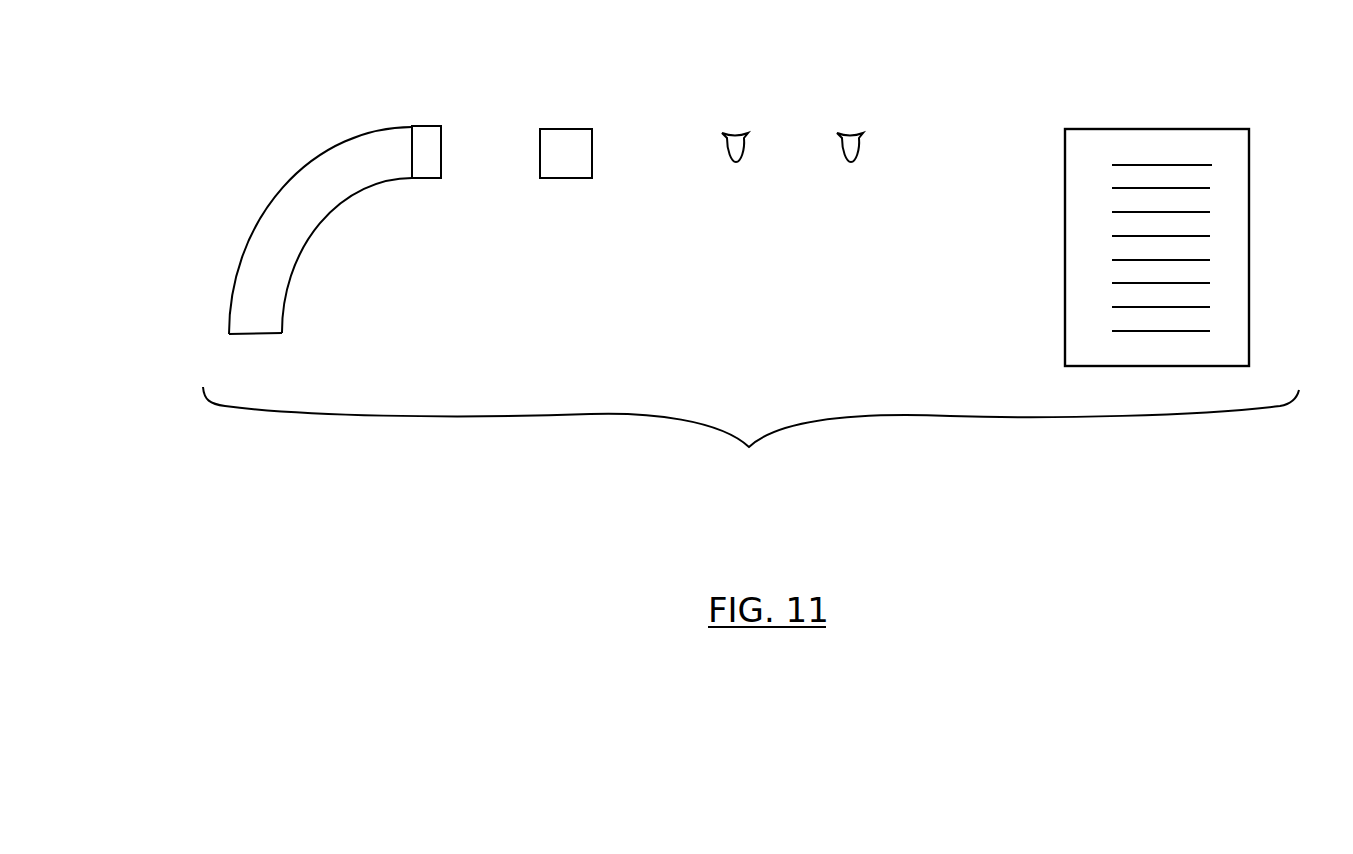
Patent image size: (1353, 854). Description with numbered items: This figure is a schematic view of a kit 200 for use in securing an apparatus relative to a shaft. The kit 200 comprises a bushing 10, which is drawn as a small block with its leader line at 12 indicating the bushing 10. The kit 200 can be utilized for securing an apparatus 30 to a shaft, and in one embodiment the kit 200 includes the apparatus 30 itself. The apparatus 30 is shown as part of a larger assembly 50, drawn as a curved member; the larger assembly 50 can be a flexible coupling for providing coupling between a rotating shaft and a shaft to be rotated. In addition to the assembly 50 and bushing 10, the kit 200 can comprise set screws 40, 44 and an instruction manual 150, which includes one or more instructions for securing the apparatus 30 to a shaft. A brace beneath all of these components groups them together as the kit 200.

The bushing 10 is at (567, 180).
The test strip port 12 is at (569, 128).
The apparatus 30 is at (428, 127).
The set screw 40 is at (740, 132).
The set screw 44 is at (853, 132).
The larger assembly 50 is at (337, 147).
The instruction manual 150 is at (1155, 128).
The kit 200 is at (751, 436).